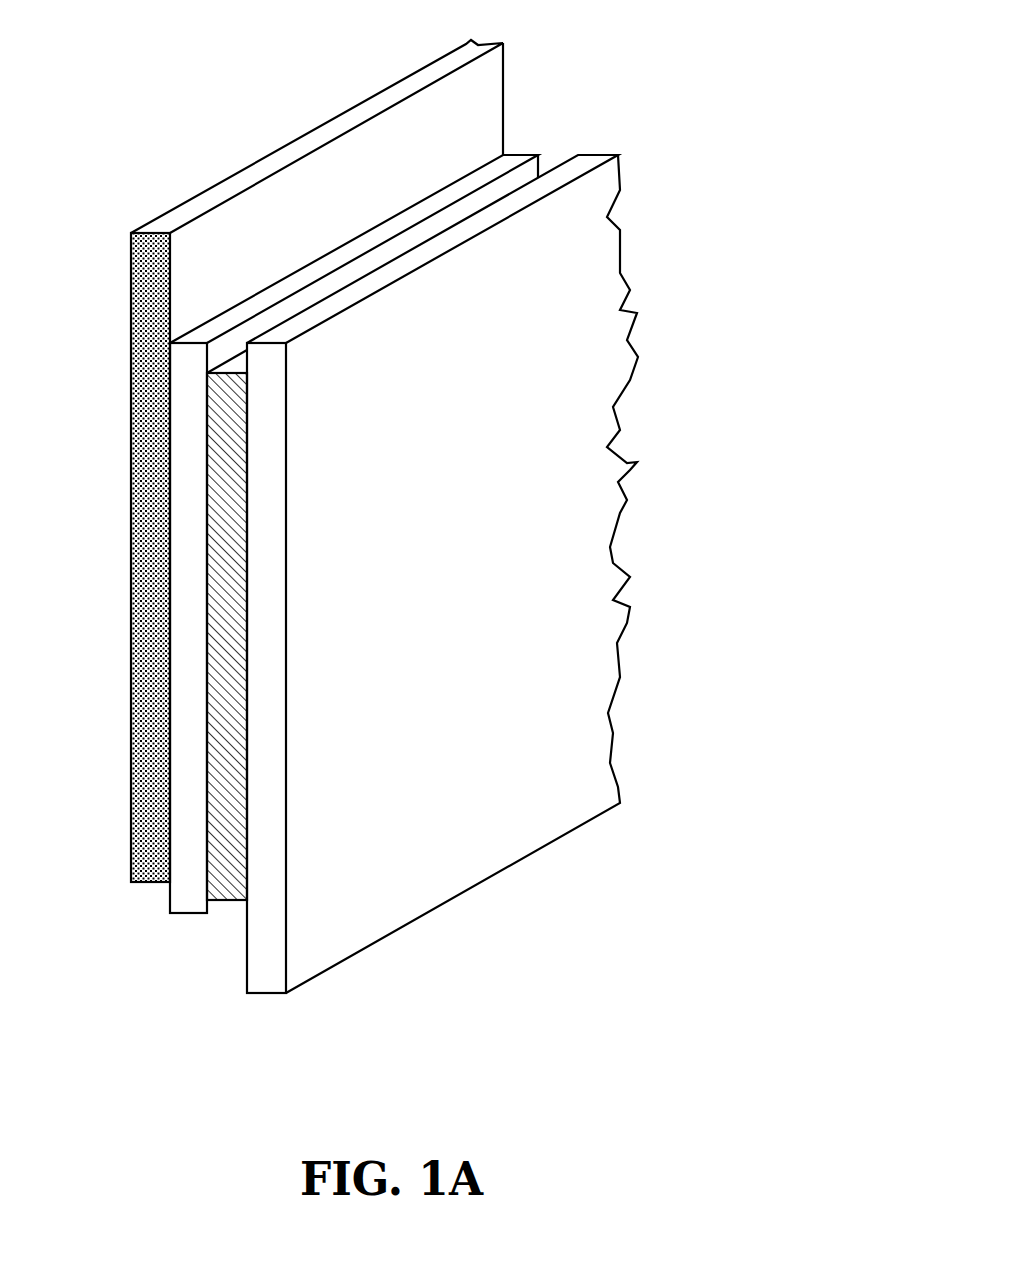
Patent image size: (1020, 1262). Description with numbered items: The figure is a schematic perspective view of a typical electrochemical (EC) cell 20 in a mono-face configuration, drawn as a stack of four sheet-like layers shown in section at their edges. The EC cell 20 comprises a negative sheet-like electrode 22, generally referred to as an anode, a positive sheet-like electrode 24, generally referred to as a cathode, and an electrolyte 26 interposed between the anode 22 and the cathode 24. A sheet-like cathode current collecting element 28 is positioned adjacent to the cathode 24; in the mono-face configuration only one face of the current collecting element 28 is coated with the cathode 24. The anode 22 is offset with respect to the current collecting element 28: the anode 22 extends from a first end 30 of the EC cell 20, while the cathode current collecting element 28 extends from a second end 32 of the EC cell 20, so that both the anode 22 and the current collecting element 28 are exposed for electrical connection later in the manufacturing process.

The electrochemical cell 20 is at (461, 550).
The negative sheet-like electrode 22 is at (150, 440).
The positive sheet-like electrode 24 is at (227, 545).
The electrolyte 26 is at (190, 493).
The cathode current collecting element 28 is at (270, 598).
The first end 30 is at (298, 476).
The second end 32 is at (348, 627).